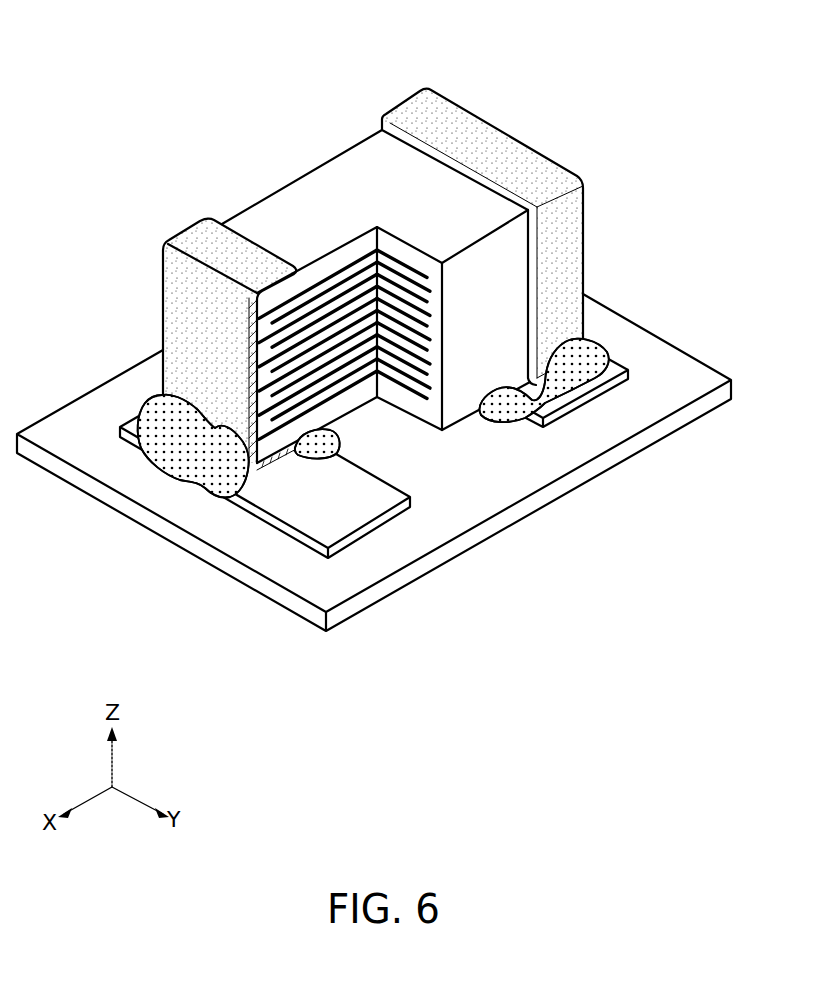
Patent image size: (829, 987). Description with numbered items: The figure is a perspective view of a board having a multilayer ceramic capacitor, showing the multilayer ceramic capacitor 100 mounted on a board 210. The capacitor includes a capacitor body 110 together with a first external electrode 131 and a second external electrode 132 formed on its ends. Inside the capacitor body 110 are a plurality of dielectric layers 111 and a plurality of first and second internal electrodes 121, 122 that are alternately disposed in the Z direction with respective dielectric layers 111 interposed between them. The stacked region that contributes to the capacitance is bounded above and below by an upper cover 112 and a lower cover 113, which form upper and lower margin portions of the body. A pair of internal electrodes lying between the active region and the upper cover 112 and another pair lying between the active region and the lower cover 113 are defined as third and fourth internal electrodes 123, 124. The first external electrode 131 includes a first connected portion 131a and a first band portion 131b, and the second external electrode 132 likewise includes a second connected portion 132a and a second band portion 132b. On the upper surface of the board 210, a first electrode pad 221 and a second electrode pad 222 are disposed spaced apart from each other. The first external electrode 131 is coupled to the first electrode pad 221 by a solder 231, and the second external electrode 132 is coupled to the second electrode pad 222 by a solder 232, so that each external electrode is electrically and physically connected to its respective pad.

The multilayer ceramic capacitor 100 is at (420, 357).
The capacitor body 110 is at (332, 360).
The dielectric layers 111 is at (265, 378).
The upper cover 112 is at (307, 282).
The lower cover 113 is at (418, 410).
The first internal electrodes 121 is at (200, 459).
The second internal electrodes 122 is at (561, 212).
The third internal electrode 123 is at (275, 305).
The fourth internal electrode 124 is at (347, 282).
The first external electrode 131 is at (228, 504).
The first connected portion 131a is at (258, 400).
The first band portion 131b is at (260, 466).
The second external electrode 132 is at (565, 250).
The second connected portion 132a is at (583, 252).
The second band portion 132b is at (578, 366).
The board 210 is at (517, 473).
The first electrode pad 221 is at (137, 425).
The second electrode pad 222 is at (608, 370).
The solder 231 is at (178, 410).
The solder 232 is at (589, 372).